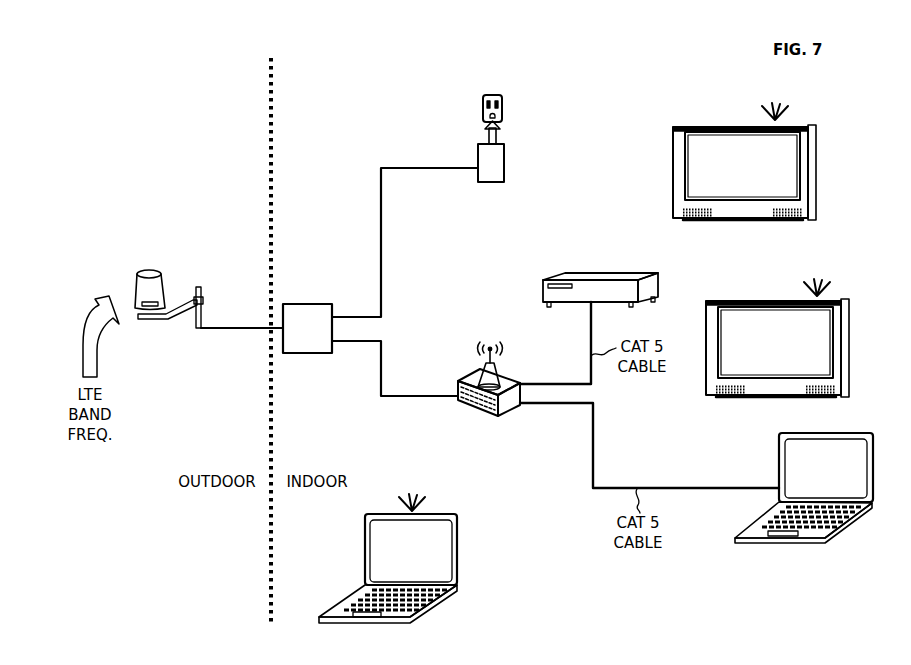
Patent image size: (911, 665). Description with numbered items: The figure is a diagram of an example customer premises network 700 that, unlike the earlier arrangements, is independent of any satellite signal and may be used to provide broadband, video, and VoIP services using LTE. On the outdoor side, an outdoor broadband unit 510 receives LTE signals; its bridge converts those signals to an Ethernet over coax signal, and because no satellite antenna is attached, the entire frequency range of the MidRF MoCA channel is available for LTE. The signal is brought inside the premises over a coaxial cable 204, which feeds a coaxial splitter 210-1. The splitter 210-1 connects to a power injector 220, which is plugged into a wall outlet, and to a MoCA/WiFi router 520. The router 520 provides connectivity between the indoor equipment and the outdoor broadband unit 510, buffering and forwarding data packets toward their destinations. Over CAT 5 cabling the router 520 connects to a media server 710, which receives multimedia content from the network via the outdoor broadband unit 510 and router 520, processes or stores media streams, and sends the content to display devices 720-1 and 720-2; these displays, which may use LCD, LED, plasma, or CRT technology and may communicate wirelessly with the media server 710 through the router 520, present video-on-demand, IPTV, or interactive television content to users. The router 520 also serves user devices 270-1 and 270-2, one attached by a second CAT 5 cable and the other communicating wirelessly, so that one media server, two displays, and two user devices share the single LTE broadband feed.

The customer premises network 700 is at (88, 39).
The outdoor broadband unit 510 is at (137, 283).
The coaxial cable 204 is at (227, 329).
The coaxial splitter 210-1 is at (318, 304).
The power injector 220 is at (478, 155).
The MoCA/WiFi router 520 is at (487, 418).
The media server 710 is at (590, 273).
The display device 720-1 is at (710, 125).
The display device 720-2 is at (742, 301).
The user device 270-1 is at (780, 463).
The user device 270-2 is at (443, 600).